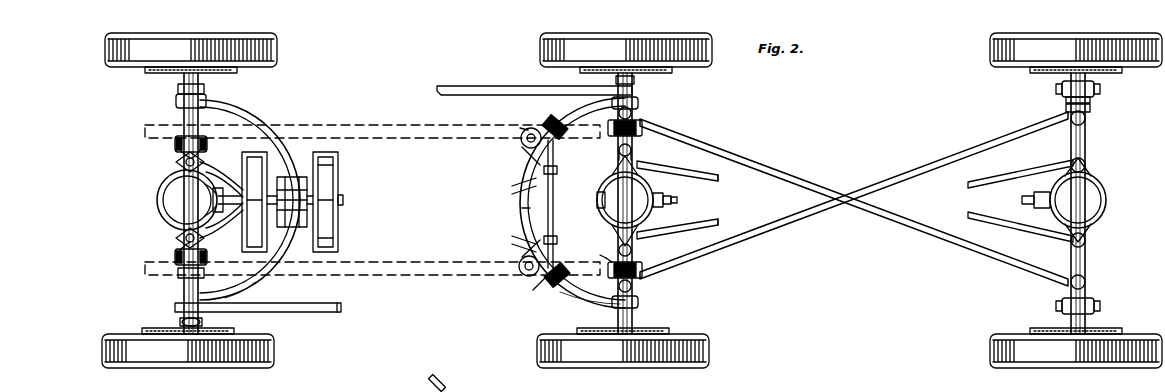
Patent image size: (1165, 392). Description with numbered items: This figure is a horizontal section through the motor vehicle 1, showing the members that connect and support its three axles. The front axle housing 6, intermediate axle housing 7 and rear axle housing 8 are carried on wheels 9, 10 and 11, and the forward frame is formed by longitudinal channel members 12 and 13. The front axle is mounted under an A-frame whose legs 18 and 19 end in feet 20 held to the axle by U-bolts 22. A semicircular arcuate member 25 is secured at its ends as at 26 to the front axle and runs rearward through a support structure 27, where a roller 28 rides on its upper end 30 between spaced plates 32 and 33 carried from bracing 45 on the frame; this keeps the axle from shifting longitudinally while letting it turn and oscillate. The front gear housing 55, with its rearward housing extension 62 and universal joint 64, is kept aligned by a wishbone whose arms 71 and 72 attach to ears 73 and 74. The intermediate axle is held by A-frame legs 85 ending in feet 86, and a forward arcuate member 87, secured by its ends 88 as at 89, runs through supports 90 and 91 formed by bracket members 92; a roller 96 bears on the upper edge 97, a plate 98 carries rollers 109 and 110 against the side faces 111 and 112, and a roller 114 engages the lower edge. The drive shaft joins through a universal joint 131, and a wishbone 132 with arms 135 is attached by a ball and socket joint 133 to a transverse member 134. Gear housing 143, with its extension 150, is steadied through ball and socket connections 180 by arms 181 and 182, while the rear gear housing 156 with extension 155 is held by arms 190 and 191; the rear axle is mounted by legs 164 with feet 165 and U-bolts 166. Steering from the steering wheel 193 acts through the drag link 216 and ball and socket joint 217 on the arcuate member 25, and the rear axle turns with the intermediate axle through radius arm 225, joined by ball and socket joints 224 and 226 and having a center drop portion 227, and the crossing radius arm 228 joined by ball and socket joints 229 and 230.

The motor vehicle 1 is at (138, 113).
The front axle housing 6 is at (178, 88).
The intermediate axle housing 7 is at (634, 325).
The rear axle housing 8 is at (1088, 271).
The wheels 9 is at (270, 33).
The wheels 10 is at (704, 32).
The wheels 11 is at (995, 34).
The channel member 12 is at (386, 124).
The channel member 13 is at (406, 276).
The leg 18 is at (180, 149).
The leg 19 is at (180, 246).
The feet 20 is at (174, 141).
The U-bolts 22 is at (206, 146).
The arcuate member 25 is at (247, 113).
The securing points of arcuate member ends 26 is at (176, 98).
The support structure 27 is at (337, 233).
The roller 28 is at (295, 177).
The upper end of arcuate member 30 is at (236, 101).
The plate 32 is at (283, 250).
The plate 33 is at (337, 186).
The bracing 45 is at (268, 123).
The housing 55 is at (157, 202).
The housing extension 62 is at (212, 186).
The universal joint 64 is at (212, 214).
The arm 71 is at (233, 178).
The arm 72 is at (210, 242).
The ear 73 is at (182, 163).
The ear 74 is at (178, 237).
The legs 85 is at (645, 127).
The feet 86 is at (612, 146).
The arcuate member 87 is at (522, 215).
The ends of arcuate member 88 is at (634, 101).
The securing points of arcuate member ends 89 is at (640, 113).
The support 90 is at (520, 163).
The support 91 is at (518, 253).
The bracket member 92 is at (524, 276).
The roller 96 is at (560, 118).
The upper edge 97 is at (582, 300).
The plate 98 is at (525, 291).
The roller 109 is at (600, 255).
The roller 110 is at (520, 128).
The side face 111 is at (510, 186).
The side face 112 is at (512, 198).
The roller 114 is at (515, 239).
The universal joint 131 is at (586, 186).
The wishbone 132 is at (556, 241).
The ball and socket joint 133 is at (522, 208).
The transverse member 134 is at (522, 169).
The arms 135 is at (613, 263).
The gear housing 143 is at (641, 198).
The gear housing extension 150 is at (662, 228).
The gear housing extension 155 is at (1032, 205).
The gear housing 156 is at (1100, 191).
The legs 164 is at (1068, 108).
The feet 165 is at (1060, 89).
The U-bolts 166 is at (1064, 100).
The ball and socket connections 180 is at (650, 166).
The arm 181 is at (718, 178).
The arm 182 is at (718, 222).
The arm 190 is at (986, 183).
The arm 191 is at (1018, 229).
The steering wheel 193 is at (451, 383).
The drag link 216 is at (290, 312).
The ball and socket joint 217 is at (180, 322).
The ball and socket joint 224 is at (642, 291).
The radius arm 225 is at (668, 276).
The ball and socket joint 226 is at (1086, 126).
The center drop portion 227 is at (916, 176).
The radius arm 228 is at (910, 236).
The ball and socket joint 229 is at (700, 122).
The ball and socket joint 230 is at (1086, 284).